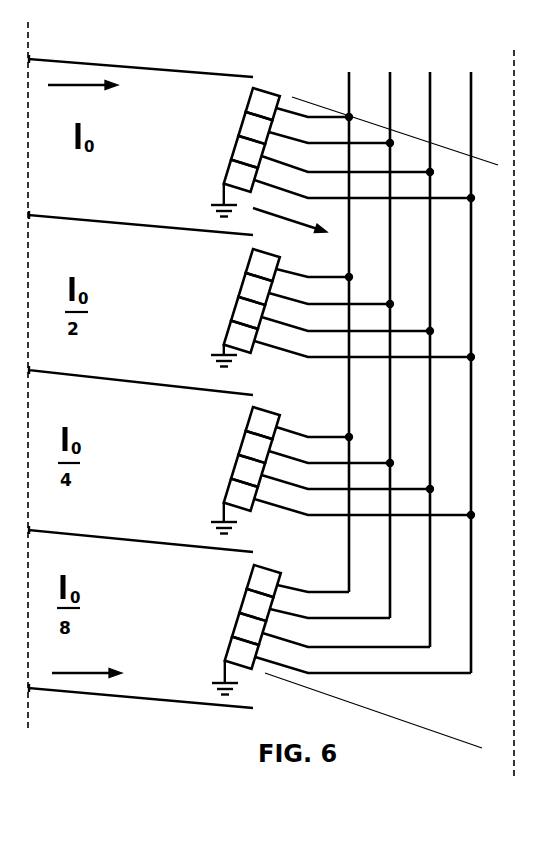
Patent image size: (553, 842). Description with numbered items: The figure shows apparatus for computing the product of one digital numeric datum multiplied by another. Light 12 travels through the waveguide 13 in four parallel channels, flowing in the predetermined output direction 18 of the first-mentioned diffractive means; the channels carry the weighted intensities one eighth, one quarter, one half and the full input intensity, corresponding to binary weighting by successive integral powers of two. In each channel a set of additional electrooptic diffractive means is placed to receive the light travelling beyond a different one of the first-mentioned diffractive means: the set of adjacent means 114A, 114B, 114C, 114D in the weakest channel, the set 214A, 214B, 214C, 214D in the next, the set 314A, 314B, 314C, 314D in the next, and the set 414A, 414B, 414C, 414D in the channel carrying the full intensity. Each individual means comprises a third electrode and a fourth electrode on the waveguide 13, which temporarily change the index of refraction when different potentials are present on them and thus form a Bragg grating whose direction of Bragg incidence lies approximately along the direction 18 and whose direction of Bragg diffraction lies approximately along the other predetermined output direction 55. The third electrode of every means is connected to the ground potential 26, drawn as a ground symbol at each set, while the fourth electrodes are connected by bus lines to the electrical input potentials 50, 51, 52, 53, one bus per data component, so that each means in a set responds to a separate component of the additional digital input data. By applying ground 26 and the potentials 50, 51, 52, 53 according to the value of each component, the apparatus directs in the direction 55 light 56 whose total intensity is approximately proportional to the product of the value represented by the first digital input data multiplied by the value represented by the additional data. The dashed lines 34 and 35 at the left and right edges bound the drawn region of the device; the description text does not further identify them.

The light 12 is at (125, 363).
The waveguide 13 is at (156, 740).
The predetermined output direction 18 is at (88, 87).
The electrical potential (ground) 26 is at (221, 203).
The first boundary line 34 is at (28, 40).
The second boundary line 35 is at (514, 63).
The electrical input potential 50 is at (462, 357).
The electrical input potential 51 is at (423, 345).
The electrical input potential 52 is at (383, 330).
The electrical input potential 53 is at (341, 319).
The other predetermined output direction 55 is at (273, 218).
The light 56 is at (322, 403).
The additional electrooptic diffractive means 114A is at (238, 652).
The additional electrooptic diffractive means 114B is at (245, 628).
The additional electrooptic diffractive means 114C is at (253, 604).
The additional electrooptic diffractive means 114D is at (260, 580).
The additional electrooptic diffractive means 214A is at (237, 494).
The additional electrooptic diffractive means 214B is at (244, 470).
The additional electrooptic diffractive means 214C is at (252, 446).
The additional electrooptic diffractive means 214D is at (259, 422).
The additional electrooptic diffractive means 314A is at (237, 336).
The additional electrooptic diffractive means 314B is at (244, 312).
The additional electrooptic diffractive means 314C is at (252, 288).
The additional electrooptic diffractive means 314D is at (259, 264).
The additional electrooptic diffractive means 414A is at (237, 175).
The additional electrooptic diffractive means 414B is at (244, 151).
The additional electrooptic diffractive means 414C is at (252, 127).
The additional electrooptic diffractive means 414D is at (259, 103).